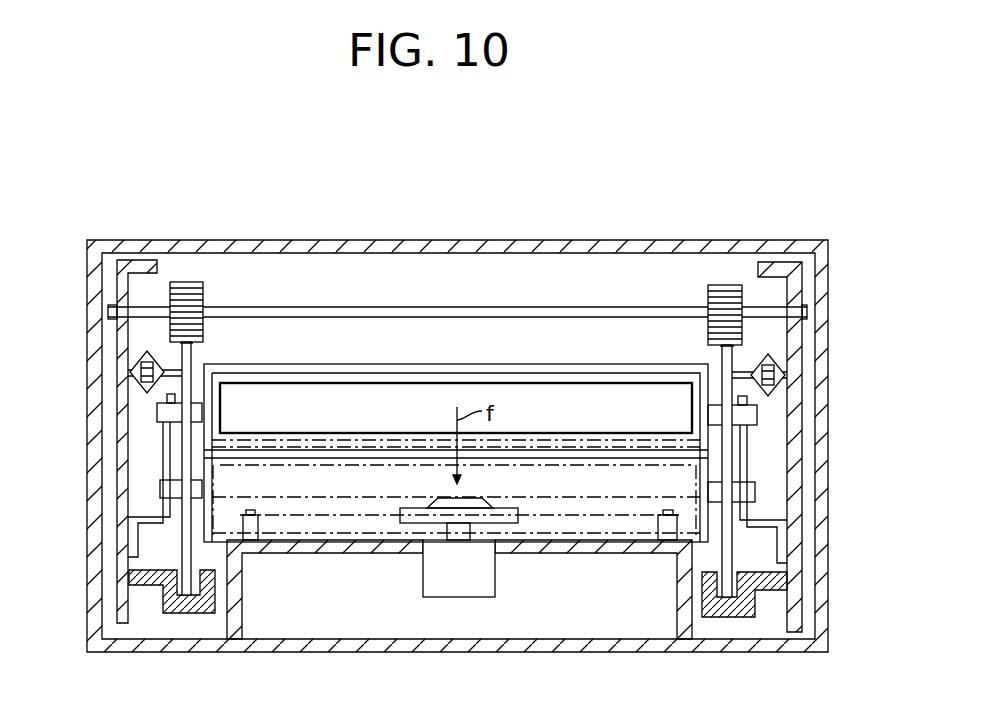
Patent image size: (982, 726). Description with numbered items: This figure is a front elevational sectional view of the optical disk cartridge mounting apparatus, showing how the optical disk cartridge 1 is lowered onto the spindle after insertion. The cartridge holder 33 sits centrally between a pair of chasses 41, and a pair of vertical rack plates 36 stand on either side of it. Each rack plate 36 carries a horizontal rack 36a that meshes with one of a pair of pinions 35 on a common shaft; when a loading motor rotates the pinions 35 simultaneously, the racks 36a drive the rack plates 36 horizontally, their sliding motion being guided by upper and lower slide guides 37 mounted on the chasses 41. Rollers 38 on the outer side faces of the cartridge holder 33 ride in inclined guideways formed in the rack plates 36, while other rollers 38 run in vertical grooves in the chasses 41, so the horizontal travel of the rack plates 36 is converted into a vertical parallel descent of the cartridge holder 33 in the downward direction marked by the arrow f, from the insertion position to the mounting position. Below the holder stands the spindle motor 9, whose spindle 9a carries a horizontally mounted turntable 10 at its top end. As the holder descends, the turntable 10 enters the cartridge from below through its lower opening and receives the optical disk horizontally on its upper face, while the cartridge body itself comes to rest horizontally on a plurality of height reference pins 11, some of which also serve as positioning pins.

The optical disk cartridge 1 is at (350, 480).
The spindle motor 9 is at (435, 568).
The spindle 9a is at (460, 530).
The turntable 10 is at (512, 512).
The height reference pins 11 is at (253, 522).
The cartridge holder 33 is at (291, 440).
The pinions 35 is at (183, 282).
The rack plates 36 is at (183, 440).
The racks 36a is at (203, 344).
The slide guides 37 is at (138, 372).
The rollers 38 is at (160, 410).
The chasses 41 is at (120, 567).